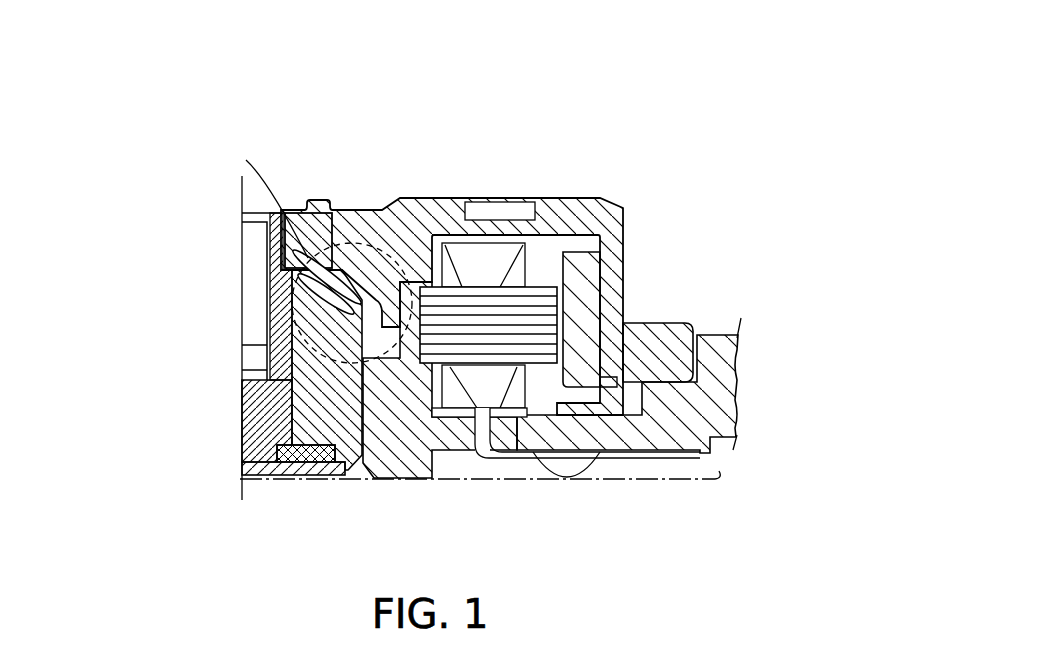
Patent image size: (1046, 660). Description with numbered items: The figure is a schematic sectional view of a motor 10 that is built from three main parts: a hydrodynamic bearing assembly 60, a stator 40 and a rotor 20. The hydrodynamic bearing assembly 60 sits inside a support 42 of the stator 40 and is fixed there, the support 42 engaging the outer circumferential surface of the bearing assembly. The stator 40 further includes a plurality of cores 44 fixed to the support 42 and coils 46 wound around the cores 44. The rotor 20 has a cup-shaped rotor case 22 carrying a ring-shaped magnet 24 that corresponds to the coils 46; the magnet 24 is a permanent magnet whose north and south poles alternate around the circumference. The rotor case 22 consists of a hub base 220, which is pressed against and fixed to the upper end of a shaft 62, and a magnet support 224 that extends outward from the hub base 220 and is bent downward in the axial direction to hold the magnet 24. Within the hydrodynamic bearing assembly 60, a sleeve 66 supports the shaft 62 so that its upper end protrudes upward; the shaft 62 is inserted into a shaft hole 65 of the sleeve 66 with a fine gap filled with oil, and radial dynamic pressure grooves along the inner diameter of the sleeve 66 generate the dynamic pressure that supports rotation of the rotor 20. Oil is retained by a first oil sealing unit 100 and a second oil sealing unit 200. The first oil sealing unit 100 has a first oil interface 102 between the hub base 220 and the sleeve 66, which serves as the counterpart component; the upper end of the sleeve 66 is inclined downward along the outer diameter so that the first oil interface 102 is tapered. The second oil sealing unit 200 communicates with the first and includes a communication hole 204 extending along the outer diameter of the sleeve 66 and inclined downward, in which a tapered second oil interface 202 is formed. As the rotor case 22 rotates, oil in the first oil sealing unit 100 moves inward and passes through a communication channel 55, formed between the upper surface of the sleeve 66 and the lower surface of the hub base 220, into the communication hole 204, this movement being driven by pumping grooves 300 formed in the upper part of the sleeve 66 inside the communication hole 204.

The motor 10 is at (417, 58).
The rotor 20 is at (628, 190).
The rotor case 22 is at (560, 198).
The magnet 24 is at (627, 297).
The magnet support 224 is at (617, 267).
The stator 40 is at (530, 484).
The support 42 is at (393, 467).
The cores 44 is at (477, 360).
The coils 46 is at (500, 397).
The communication channel 55 is at (330, 238).
The hydrodynamic bearing assembly 60 is at (343, 478).
The shaft 62 is at (240, 426).
The shaft hole 65 is at (240, 405).
The sleeve 66 is at (240, 463).
The first oil sealing unit 100 is at (350, 243).
The first oil interface 102 is at (358, 282).
The second oil sealing unit 200 is at (262, 322).
The second oil interface 202 is at (343, 332).
The communication hole 204 is at (292, 290).
The hub base 220 is at (283, 248).
The pumping grooves 300 is at (297, 272).